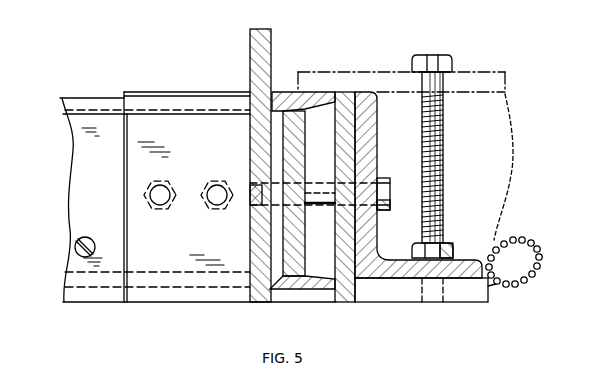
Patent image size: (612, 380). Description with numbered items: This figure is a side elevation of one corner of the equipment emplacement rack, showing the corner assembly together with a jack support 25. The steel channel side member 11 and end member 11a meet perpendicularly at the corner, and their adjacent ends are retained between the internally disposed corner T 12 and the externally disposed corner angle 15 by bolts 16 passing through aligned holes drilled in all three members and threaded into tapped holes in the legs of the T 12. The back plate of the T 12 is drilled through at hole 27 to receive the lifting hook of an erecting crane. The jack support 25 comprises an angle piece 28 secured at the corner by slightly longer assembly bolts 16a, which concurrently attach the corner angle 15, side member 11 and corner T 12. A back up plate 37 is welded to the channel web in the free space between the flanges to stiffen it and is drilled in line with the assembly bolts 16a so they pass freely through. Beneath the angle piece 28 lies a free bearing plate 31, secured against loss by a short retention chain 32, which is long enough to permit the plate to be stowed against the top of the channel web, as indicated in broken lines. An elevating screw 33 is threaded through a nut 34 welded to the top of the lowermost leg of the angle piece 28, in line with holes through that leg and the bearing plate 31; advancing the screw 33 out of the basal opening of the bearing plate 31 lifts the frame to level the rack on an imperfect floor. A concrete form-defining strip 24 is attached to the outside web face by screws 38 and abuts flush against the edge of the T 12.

The side member 11 is at (296, 110).
The end member 11a is at (94, 100).
The corner T 12 is at (172, 255).
The corner angle 15 is at (172, 91).
The bolt 16 is at (214, 200).
The assembly bolt 16a is at (384, 180).
The concrete form-defining strip 24 is at (108, 190).
The jack support 25 is at (464, 205).
The hole 27 is at (249, 74).
The angle piece 28 is at (366, 136).
The bearing plate 31 is at (505, 72).
The retention chain 32 is at (530, 240).
The elevating screw 33 is at (442, 188).
The nut 34 is at (452, 252).
The back up plate 37 is at (292, 158).
The screw 38 is at (88, 237).